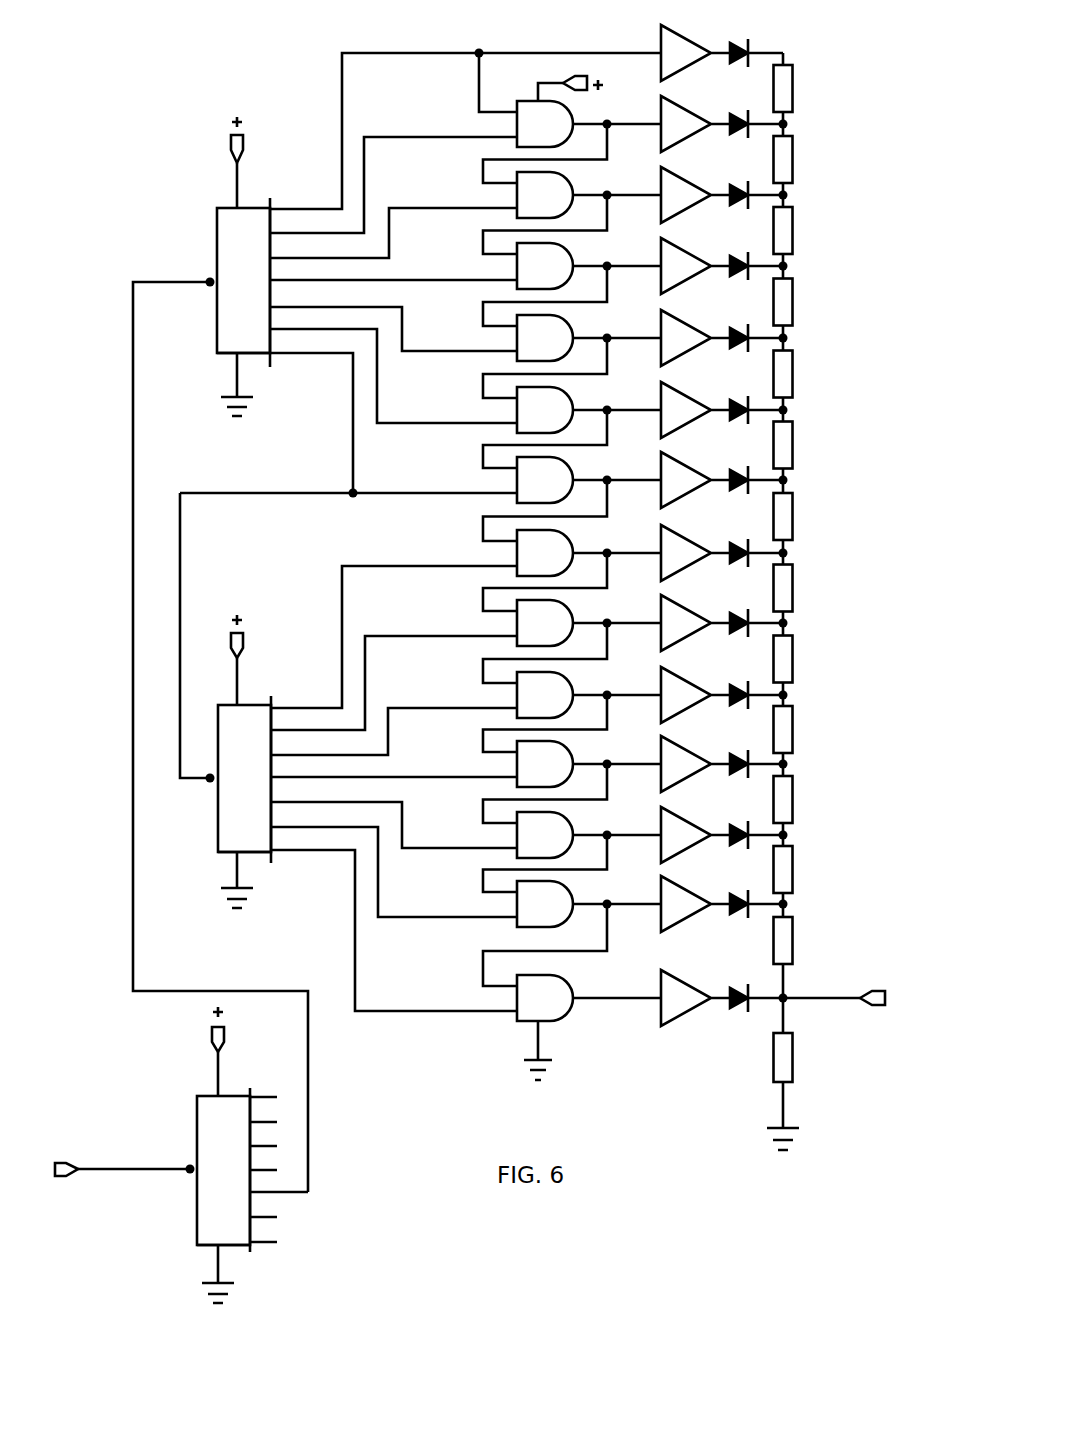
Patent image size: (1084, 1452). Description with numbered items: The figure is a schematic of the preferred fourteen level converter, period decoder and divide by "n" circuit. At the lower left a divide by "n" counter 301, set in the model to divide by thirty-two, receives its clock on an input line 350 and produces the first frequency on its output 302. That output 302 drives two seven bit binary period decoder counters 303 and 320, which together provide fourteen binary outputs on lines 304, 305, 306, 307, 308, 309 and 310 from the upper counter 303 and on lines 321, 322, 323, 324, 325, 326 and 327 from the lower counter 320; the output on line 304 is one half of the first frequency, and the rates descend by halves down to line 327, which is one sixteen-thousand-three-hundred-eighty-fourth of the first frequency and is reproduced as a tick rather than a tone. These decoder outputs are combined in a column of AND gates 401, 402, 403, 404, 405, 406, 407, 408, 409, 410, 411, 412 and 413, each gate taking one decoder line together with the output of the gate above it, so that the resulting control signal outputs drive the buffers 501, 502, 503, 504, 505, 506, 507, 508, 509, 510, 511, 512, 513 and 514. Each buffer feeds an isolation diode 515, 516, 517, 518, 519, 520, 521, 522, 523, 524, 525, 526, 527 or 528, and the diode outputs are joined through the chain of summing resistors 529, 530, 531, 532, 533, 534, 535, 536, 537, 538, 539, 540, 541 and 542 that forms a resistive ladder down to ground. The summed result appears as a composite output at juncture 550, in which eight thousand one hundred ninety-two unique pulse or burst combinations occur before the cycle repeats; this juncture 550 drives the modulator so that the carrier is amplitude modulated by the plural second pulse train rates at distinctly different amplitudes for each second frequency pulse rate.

The divide by n counter 301 is at (218, 1118).
The output 302 is at (298, 1190).
The seven bit binary period decoder counter 303 is at (237, 262).
The binary output line 304 is at (412, 60).
The binary output line 305 is at (435, 134).
The binary output line 306 is at (393, 206).
The binary output line 307 is at (455, 280).
The binary output line 308 is at (458, 348).
The binary output line 309 is at (439, 420).
The binary output line 310 is at (434, 492).
The seven bit binary period decoder counter 320 is at (243, 828).
The binary output line 321 is at (421, 563).
The binary output line 322 is at (432, 634).
The binary output line 323 is at (446, 700).
The binary output line 324 is at (454, 774).
The binary output line 325 is at (458, 847).
The binary output line 326 is at (442, 922).
The binary output line 327 is at (422, 1011).
The input line from 150 350 is at (50, 1173).
The AND gate 401 is at (528, 124).
The AND gate 402 is at (550, 200).
The AND gate 403 is at (550, 271).
The AND gate 404 is at (550, 343).
The AND gate 405 is at (550, 415).
The AND gate 406 is at (550, 485).
The AND gate 407 is at (550, 558).
The AND gate 408 is at (550, 628).
The AND gate 409 is at (550, 700).
The AND gate 410 is at (550, 769).
The AND gate 411 is at (550, 840).
The AND gate 412 is at (550, 909).
The AND gate 413 is at (550, 1003).
The buffer 501 is at (698, 42).
The buffer 502 is at (698, 116).
The buffer 503 is at (698, 187).
The buffer 504 is at (698, 258).
The buffer 505 is at (698, 330).
The buffer 506 is at (698, 402).
The buffer 507 is at (698, 472).
The buffer 508 is at (698, 545).
The buffer 509 is at (698, 615).
The buffer 510 is at (698, 687).
The buffer 511 is at (698, 756).
The buffer 512 is at (698, 827).
The buffer 513 is at (698, 896).
The buffer 514 is at (698, 990).
The isolation diode 515 is at (751, 44).
The isolation diode 516 is at (751, 119).
The isolation diode 517 is at (751, 190).
The isolation diode 518 is at (751, 261).
The isolation diode 519 is at (751, 333).
The isolation diode 520 is at (751, 405).
The isolation diode 521 is at (751, 475).
The isolation diode 522 is at (751, 548).
The isolation diode 523 is at (751, 618).
The isolation diode 524 is at (751, 690).
The isolation diode 525 is at (751, 759).
The isolation diode 526 is at (751, 830).
The isolation diode 527 is at (751, 899).
The isolation diode 528 is at (751, 993).
The summing resistor 529 is at (796, 99).
The summing resistor 530 is at (796, 170).
The summing resistor 531 is at (796, 241).
The summing resistor 532 is at (796, 312).
The summing resistor 533 is at (796, 384).
The summing resistor 534 is at (796, 455).
The summing resistor 535 is at (796, 526).
The summing resistor 536 is at (796, 598).
The summing resistor 537 is at (796, 669).
The summing resistor 538 is at (796, 739).
The summing resistor 539 is at (796, 809).
The summing resistor 540 is at (796, 880).
The summing resistor 541 is at (796, 943).
The summing resistor 542 is at (796, 1076).
The juncture 550 is at (877, 995).